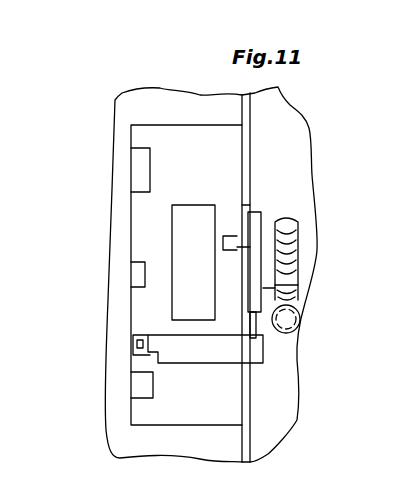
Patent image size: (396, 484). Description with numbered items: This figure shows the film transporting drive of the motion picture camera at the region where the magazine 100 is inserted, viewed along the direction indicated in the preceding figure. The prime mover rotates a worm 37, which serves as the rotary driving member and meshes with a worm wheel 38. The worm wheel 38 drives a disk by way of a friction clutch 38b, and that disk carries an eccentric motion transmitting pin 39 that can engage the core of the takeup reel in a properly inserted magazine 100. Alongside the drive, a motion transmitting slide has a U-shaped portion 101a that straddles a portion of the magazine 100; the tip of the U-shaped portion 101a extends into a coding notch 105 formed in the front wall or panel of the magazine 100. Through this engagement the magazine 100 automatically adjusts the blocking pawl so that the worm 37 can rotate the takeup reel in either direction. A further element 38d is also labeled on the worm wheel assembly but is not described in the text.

The magazine 100 is at (177, 137).
The U-shaped portion 101a is at (210, 343).
The coding notch 105 is at (133, 341).
The eccentric motion transmitting pin 39 is at (255, 212).
The worm wheel 38 is at (298, 243).
The friction clutch 38b is at (272, 258).
The plate 38d is at (255, 288).
The worm 37 is at (290, 321).